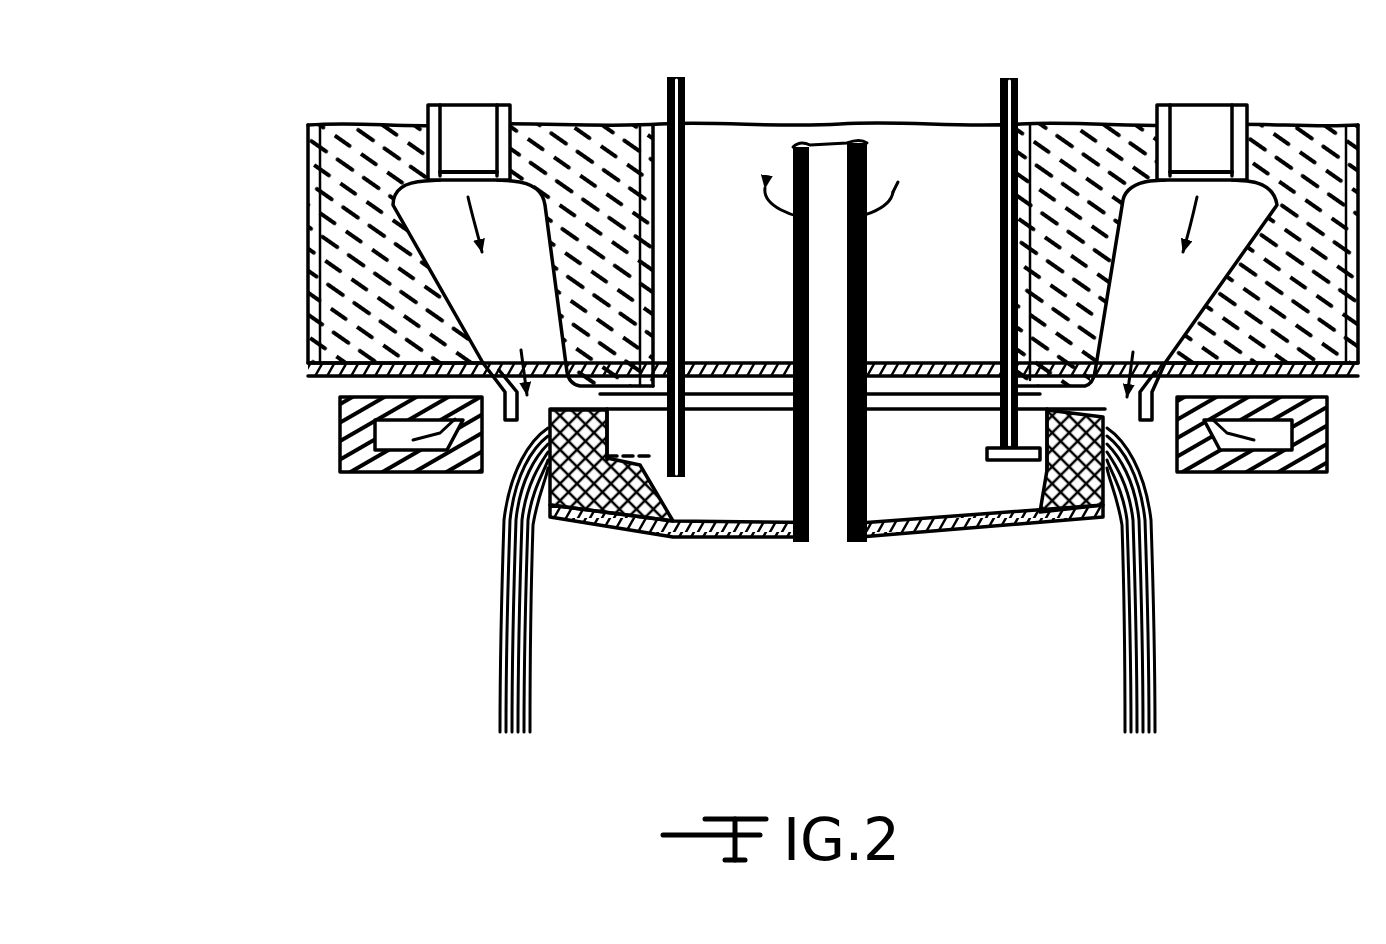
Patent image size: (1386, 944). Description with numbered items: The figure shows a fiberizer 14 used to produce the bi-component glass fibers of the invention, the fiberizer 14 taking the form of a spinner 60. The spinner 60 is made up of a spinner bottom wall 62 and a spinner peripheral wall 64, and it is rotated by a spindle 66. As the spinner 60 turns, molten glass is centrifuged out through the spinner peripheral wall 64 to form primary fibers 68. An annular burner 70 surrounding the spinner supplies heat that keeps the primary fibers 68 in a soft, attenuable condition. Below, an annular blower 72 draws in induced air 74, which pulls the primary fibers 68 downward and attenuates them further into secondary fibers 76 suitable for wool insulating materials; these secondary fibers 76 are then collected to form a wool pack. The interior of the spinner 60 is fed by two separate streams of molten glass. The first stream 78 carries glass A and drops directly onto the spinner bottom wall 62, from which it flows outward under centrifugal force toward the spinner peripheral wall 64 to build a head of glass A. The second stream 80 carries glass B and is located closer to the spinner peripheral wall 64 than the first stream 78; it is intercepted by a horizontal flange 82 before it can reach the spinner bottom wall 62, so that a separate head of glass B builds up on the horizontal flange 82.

The fiberizer 14 is at (282, 336).
The spinner 60 is at (901, 393).
The spinner bottom wall 62 is at (1058, 532).
The spinner peripheral wall 64 is at (568, 512).
The spindle 66 is at (870, 180).
The primary fibers 68 is at (497, 492).
The annular burner 70 is at (515, 150).
The annular blower 72 is at (338, 448).
The induced air 74 is at (325, 383).
The secondary fibers 76 is at (494, 671).
The first stream 78 is at (686, 106).
The second stream 80 is at (1018, 106).
The horizontal flange 82 is at (993, 462).